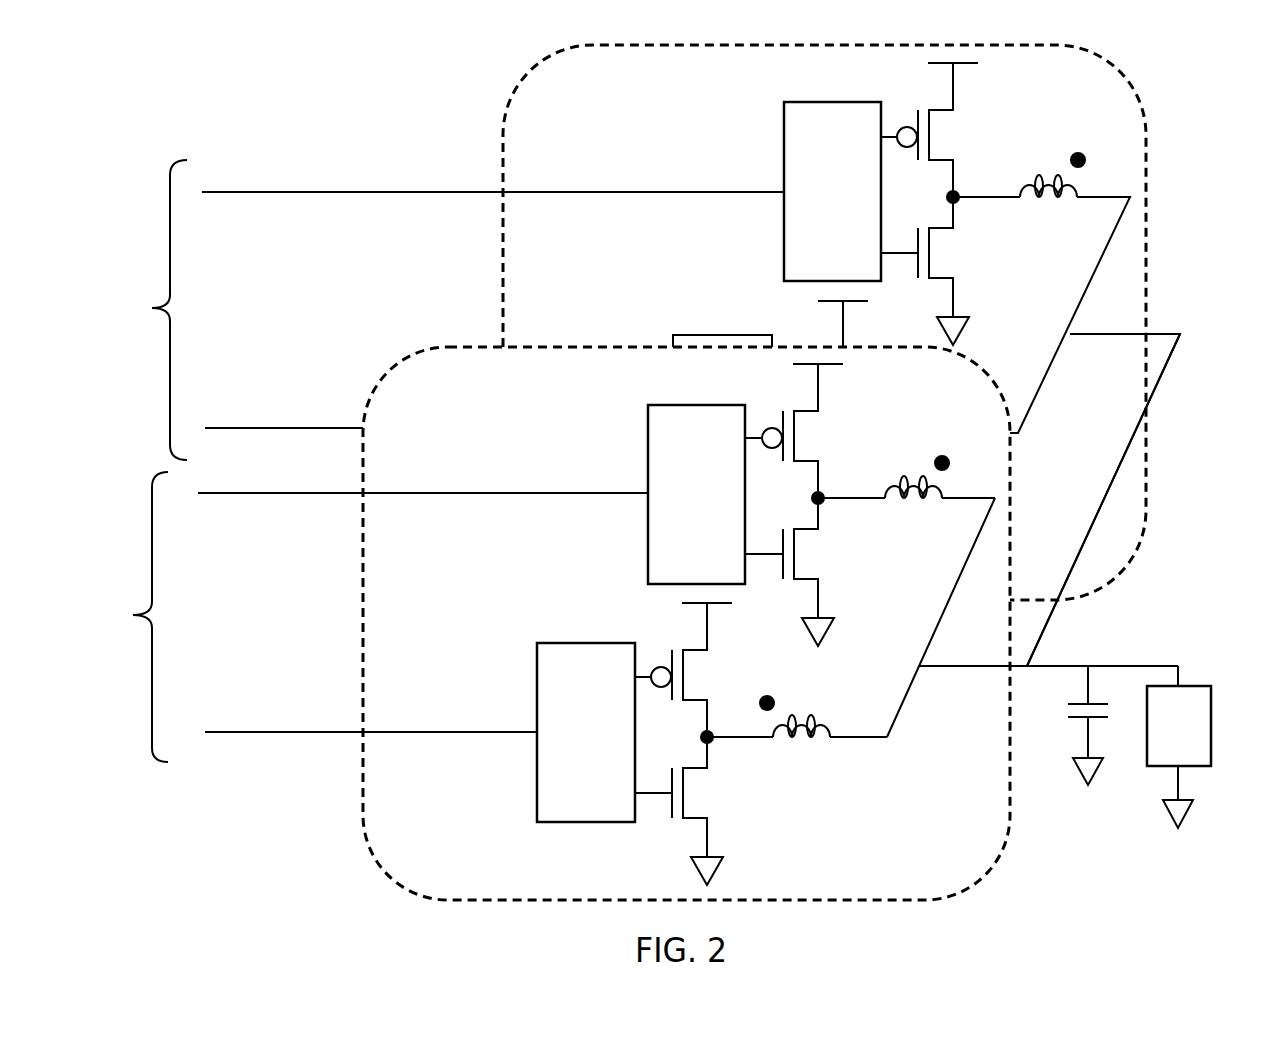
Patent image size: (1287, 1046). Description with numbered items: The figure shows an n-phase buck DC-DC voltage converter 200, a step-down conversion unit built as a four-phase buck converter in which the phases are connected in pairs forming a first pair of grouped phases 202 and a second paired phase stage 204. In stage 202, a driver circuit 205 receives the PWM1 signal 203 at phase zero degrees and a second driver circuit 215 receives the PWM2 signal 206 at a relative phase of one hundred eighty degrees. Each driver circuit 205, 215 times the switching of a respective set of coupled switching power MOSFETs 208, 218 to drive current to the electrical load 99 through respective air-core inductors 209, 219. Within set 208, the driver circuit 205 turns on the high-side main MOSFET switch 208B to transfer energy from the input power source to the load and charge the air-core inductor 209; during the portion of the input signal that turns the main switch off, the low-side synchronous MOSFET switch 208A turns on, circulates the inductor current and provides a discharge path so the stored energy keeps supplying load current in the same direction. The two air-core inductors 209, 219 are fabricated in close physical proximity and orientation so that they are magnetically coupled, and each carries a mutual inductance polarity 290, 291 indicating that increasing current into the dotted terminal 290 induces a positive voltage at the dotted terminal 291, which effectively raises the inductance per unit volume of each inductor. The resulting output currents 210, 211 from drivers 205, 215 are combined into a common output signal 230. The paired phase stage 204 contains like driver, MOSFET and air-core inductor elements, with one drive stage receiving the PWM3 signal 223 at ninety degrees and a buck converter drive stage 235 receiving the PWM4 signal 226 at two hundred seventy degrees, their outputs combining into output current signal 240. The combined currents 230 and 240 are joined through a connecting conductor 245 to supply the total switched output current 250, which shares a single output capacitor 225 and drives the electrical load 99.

The n-phase buck DC-DC voltage converter 200 is at (192, 70).
The first pair of grouped phases 202 is at (363, 817).
The PWM1 signal 203 is at (275, 732).
The paired phase stage 204 is at (1146, 137).
The driver circuit 205 is at (537, 783).
The PWM2 signal 206 is at (270, 493).
The set of coupled switching power MOSFETs 208 is at (663, 734).
The synchronous MOSFET switch 208A is at (682, 826).
The main MOSFET switch 208B is at (660, 645).
The air-core inductor 209 is at (843, 710).
The output current 210 is at (863, 737).
The output current 211 is at (973, 497).
The driver circuit 215 is at (648, 441).
The set of coupled switching power MOSFETs 218 is at (829, 610).
The air-core inductor 219 is at (922, 532).
The PWM3 signal 223 is at (280, 428).
The output capacitor 225 is at (1072, 722).
The PWM4 signal 226 is at (273, 192).
The common output signal 230 is at (907, 697).
The buck converter drive stage 235 is at (784, 126).
The output current signal 240 is at (1100, 262).
The connecting conductor 245 is at (1162, 372).
The total switched output current 250 is at (1130, 666).
The mutual inductance polarity 290 is at (778, 696).
The mutual inductance polarity 291 is at (950, 457).
The electrical load 99 is at (1211, 703).